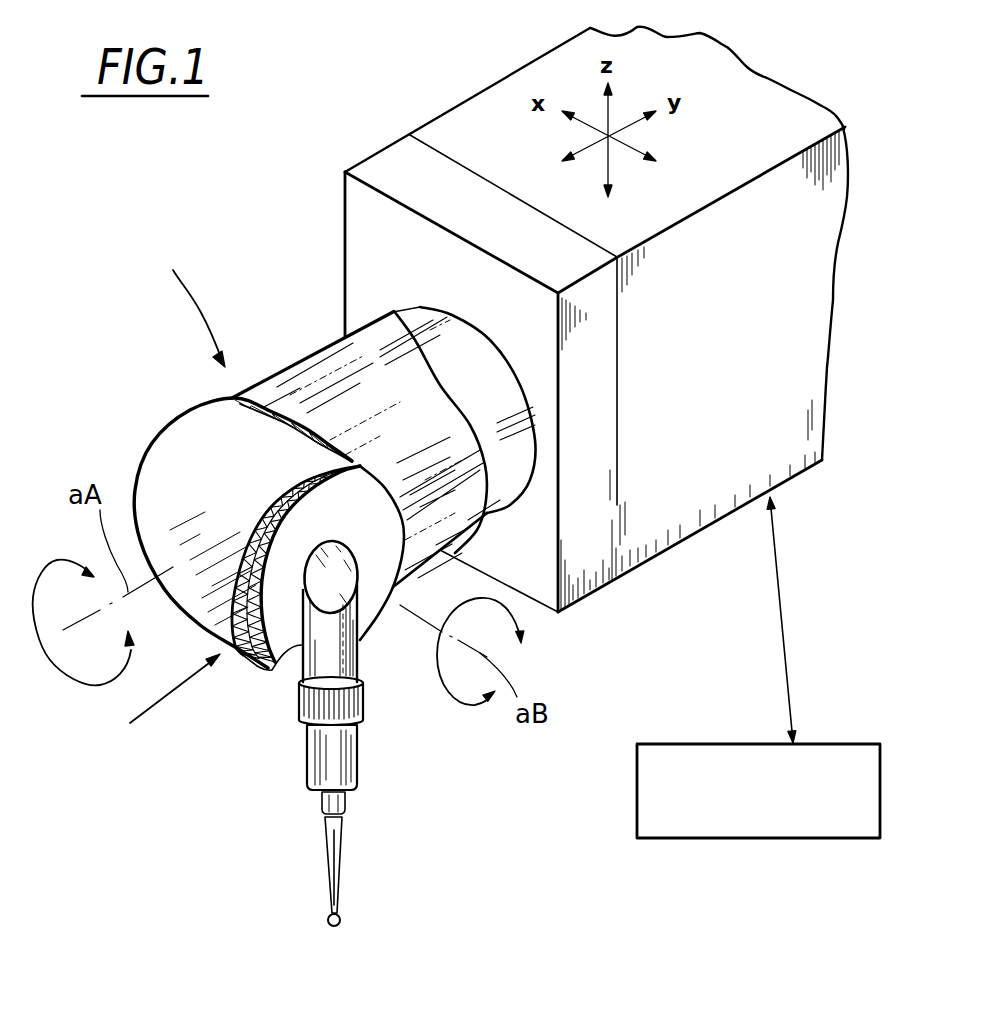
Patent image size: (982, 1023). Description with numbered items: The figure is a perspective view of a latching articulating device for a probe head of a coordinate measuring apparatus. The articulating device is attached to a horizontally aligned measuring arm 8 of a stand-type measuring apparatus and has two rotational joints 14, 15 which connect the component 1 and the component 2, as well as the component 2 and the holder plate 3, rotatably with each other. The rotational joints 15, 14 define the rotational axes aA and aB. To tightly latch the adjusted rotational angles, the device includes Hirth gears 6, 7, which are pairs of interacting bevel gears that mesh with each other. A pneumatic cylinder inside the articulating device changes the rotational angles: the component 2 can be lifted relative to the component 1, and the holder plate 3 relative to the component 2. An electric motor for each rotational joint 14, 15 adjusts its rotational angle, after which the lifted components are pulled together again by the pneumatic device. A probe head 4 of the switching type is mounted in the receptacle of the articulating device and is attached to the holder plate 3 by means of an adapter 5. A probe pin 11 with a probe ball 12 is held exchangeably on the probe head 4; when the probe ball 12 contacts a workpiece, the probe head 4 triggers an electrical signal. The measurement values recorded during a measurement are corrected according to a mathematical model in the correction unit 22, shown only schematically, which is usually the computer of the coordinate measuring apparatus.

The component 1 is at (287, 383).
The component 2 is at (150, 463).
The holder plate 3 is at (333, 570).
The probe head 4 is at (347, 748).
The adapter 5 is at (275, 667).
The Hirth gear 6 is at (233, 647).
The Hirth gear 7 is at (233, 397).
The measuring arm 8 is at (722, 500).
The probe pin 11 is at (327, 860).
The probe ball 12 is at (340, 924).
The rotational joint 14 is at (167, 707).
The rotational joint 15 is at (192, 303).
The correction unit 22 is at (670, 828).